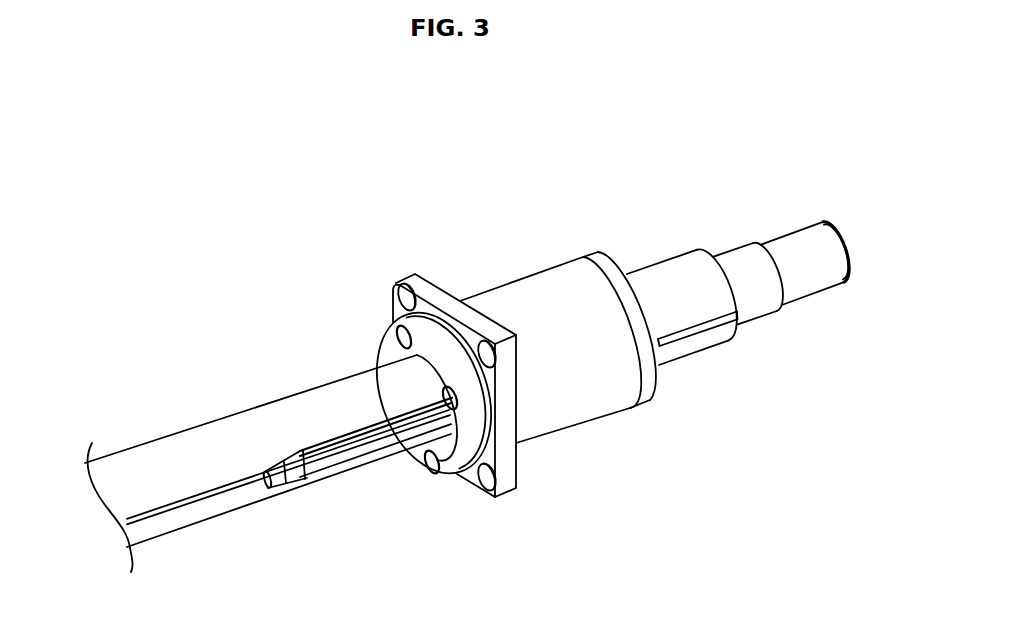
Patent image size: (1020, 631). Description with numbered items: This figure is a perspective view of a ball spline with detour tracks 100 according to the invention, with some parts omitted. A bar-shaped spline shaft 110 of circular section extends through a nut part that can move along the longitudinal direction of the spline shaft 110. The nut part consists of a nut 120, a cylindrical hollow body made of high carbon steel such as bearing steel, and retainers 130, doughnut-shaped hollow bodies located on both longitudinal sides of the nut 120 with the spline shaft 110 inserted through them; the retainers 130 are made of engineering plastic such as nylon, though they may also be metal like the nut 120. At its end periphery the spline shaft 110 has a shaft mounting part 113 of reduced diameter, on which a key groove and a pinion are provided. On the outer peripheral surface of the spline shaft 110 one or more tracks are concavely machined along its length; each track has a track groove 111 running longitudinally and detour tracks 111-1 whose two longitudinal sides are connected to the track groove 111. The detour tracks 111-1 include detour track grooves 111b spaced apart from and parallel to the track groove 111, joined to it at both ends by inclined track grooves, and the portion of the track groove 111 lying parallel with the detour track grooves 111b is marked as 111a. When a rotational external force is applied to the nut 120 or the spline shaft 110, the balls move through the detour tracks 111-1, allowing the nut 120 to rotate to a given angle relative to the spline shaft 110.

The cable connector assembly 100 is at (291, 180).
The spline shaft 110 is at (148, 463).
The track groove 111 is at (190, 503).
The detour tracks 111-1 is at (203, 407).
The track groove parallel with the detour track grooves 111a is at (310, 482).
The detour track grooves 111b is at (343, 436).
The shaft mounting part 113 is at (803, 248).
The nut 120 is at (562, 403).
The retainers 130 is at (437, 335).